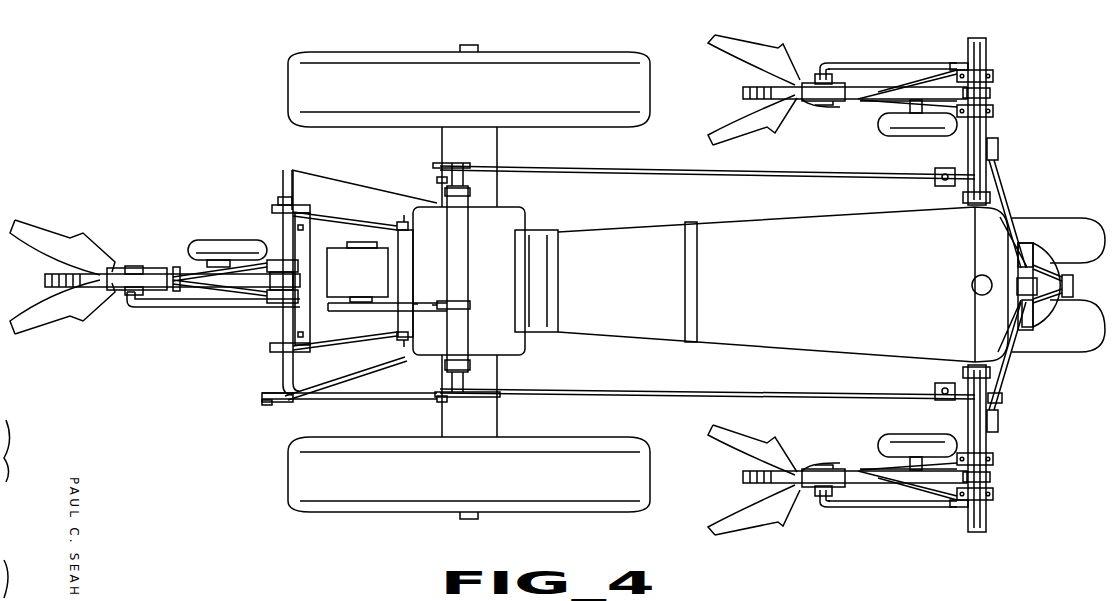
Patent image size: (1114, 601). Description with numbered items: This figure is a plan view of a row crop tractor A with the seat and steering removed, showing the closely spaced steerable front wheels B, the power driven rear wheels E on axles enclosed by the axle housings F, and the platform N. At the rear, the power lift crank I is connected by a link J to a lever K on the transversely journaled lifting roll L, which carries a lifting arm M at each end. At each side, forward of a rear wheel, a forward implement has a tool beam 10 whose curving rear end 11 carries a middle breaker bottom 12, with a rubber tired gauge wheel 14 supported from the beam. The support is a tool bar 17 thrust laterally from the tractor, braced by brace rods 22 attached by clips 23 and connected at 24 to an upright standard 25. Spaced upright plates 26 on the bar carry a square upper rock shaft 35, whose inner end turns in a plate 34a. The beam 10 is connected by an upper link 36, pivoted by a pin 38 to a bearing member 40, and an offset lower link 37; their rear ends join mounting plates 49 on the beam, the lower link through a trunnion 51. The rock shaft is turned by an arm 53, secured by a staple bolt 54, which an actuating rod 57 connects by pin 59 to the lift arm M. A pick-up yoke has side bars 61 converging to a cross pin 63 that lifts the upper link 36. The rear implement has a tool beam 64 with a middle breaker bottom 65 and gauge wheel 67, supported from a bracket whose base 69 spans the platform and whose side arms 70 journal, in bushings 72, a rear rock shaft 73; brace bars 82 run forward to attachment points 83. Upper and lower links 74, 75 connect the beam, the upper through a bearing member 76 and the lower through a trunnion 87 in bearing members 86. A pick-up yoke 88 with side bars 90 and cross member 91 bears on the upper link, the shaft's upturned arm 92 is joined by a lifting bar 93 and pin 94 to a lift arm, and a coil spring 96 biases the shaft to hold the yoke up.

The tool carrier or beam 10 is at (790, 84).
The rearwardly and downwardly curving rear end 11 is at (743, 93).
The middle breaker plow or bottom 12 is at (743, 50).
The rubber tired gauge wheel 14 is at (903, 133).
The tool bar or beam 17 is at (978, 38).
The brace rods 22 is at (1006, 191).
The clips 23 is at (999, 151).
The connection of brace rods to standard 24 is at (1040, 272).
The upright standard 25 is at (1040, 303).
The upright plates 26 is at (996, 81).
The plate 34a is at (992, 200).
The upper rock shaft 35 is at (986, 56).
The upper link 36 is at (904, 87).
The lower link 37 is at (877, 61).
The pin 38 is at (955, 63).
The bearing member 40 is at (994, 93).
The mounting plates 49 is at (803, 105).
The trunnion portion or member 51 is at (827, 70).
The lever or arm 53 is at (945, 168).
The staple bolt 54 is at (1003, 398).
The actuating rod 57 is at (731, 180).
The pin 59 is at (440, 180).
The side bars 61 is at (916, 84).
The cross pin 63 is at (874, 492).
The tool carrier or beam 64 is at (45, 283).
The middle breaker bottom 65 is at (53, 236).
The gauge wheel 67 is at (232, 242).
The base portion 69 is at (311, 230).
The side arms 70 is at (275, 210).
The bushings 72 is at (294, 210).
The rear rock shaft 73 is at (283, 328).
The upper link 74 is at (152, 270).
The lower link 75 is at (154, 310).
The bearing member 76 is at (310, 279).
The brace bars 82 is at (362, 227).
The points of attachment 83 is at (405, 214).
The bearing members 86 is at (126, 303).
The trunnion portion 87 is at (134, 266).
The pick-up yoke 88 is at (240, 305).
The side bars 90 is at (200, 262).
The cross portion or member 91 is at (175, 266).
The upturned end or arm 92 is at (270, 390).
The lifting bar 93 is at (375, 401).
The pin 94 is at (268, 401).
The retractible coil spring 96 is at (320, 391).
The row crop tractor A is at (798, 221).
The front wheels B is at (1080, 322).
The rear tractor wheels E is at (561, 55).
The axle housings F is at (505, 153).
The crank I is at (342, 311).
The link J is at (413, 304).
The lever K is at (437, 296).
The lifting roll or shaft L is at (466, 273).
The lifting arm M is at (470, 165).
The platform N is at (371, 185).